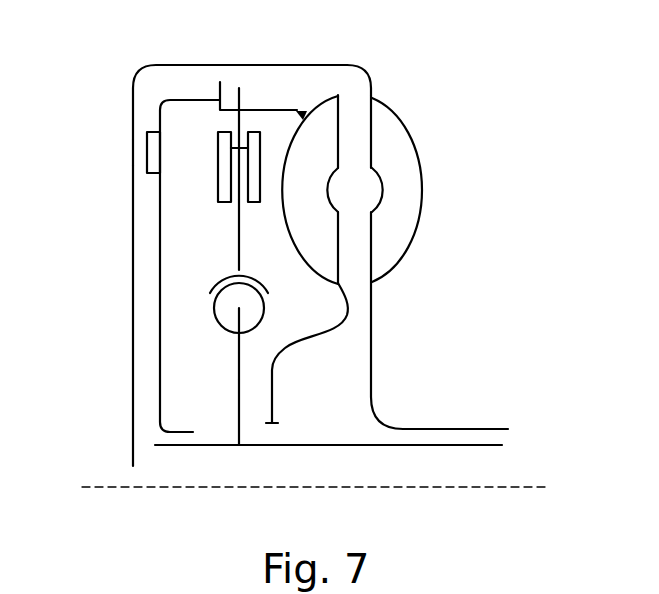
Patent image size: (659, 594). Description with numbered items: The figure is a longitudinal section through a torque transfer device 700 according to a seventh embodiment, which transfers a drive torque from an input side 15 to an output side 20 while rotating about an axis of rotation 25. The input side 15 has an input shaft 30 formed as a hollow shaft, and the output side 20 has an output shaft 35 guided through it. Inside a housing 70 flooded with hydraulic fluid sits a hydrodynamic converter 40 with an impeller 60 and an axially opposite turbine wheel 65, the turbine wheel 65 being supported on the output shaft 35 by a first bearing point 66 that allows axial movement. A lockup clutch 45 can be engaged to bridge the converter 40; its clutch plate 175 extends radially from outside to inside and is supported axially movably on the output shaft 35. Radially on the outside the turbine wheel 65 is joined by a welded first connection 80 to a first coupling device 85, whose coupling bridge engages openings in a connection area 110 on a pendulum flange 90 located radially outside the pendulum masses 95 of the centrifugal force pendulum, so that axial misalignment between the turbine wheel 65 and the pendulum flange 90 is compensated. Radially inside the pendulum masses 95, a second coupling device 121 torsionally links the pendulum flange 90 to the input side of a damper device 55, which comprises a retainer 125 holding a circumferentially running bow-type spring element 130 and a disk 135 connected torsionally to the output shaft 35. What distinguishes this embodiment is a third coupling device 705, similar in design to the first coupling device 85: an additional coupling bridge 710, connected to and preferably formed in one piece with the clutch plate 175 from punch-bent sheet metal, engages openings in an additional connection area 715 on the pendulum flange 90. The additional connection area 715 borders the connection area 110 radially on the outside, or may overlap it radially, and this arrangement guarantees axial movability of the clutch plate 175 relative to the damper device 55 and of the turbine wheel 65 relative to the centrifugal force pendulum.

The torque transfer device 700 is at (543, 140).
The housing 70 is at (325, 64).
The hydrodynamic converter 40 is at (377, 89).
The lockup clutch 45 is at (126, 152).
The input shaft 30 is at (490, 428).
The input side 15 is at (428, 410).
The third coupling device 705 is at (178, 88).
The additional coupling bridge 710 is at (172, 99).
The additional connection area 715 is at (220, 82).
The connection area 110 is at (257, 110).
The first connection 80 is at (302, 110).
The first coupling device 85 is at (259, 93).
The turbine wheel 65 is at (320, 138).
The impeller 60 is at (403, 190).
The damper device 55 is at (238, 450).
The pendulum flange 90 is at (238, 230).
The disk 135 is at (238, 411).
The pendulum masses 95 is at (218, 188).
The second coupling device 121 is at (212, 273).
The spring element 130 is at (266, 308).
The first bearing point 66 is at (273, 425).
The clutch plate 175 is at (158, 365).
The retainer 125 is at (193, 359).
The output side 20 is at (400, 457).
The output shaft 35 is at (445, 448).
The axis of rotation 25 is at (473, 488).